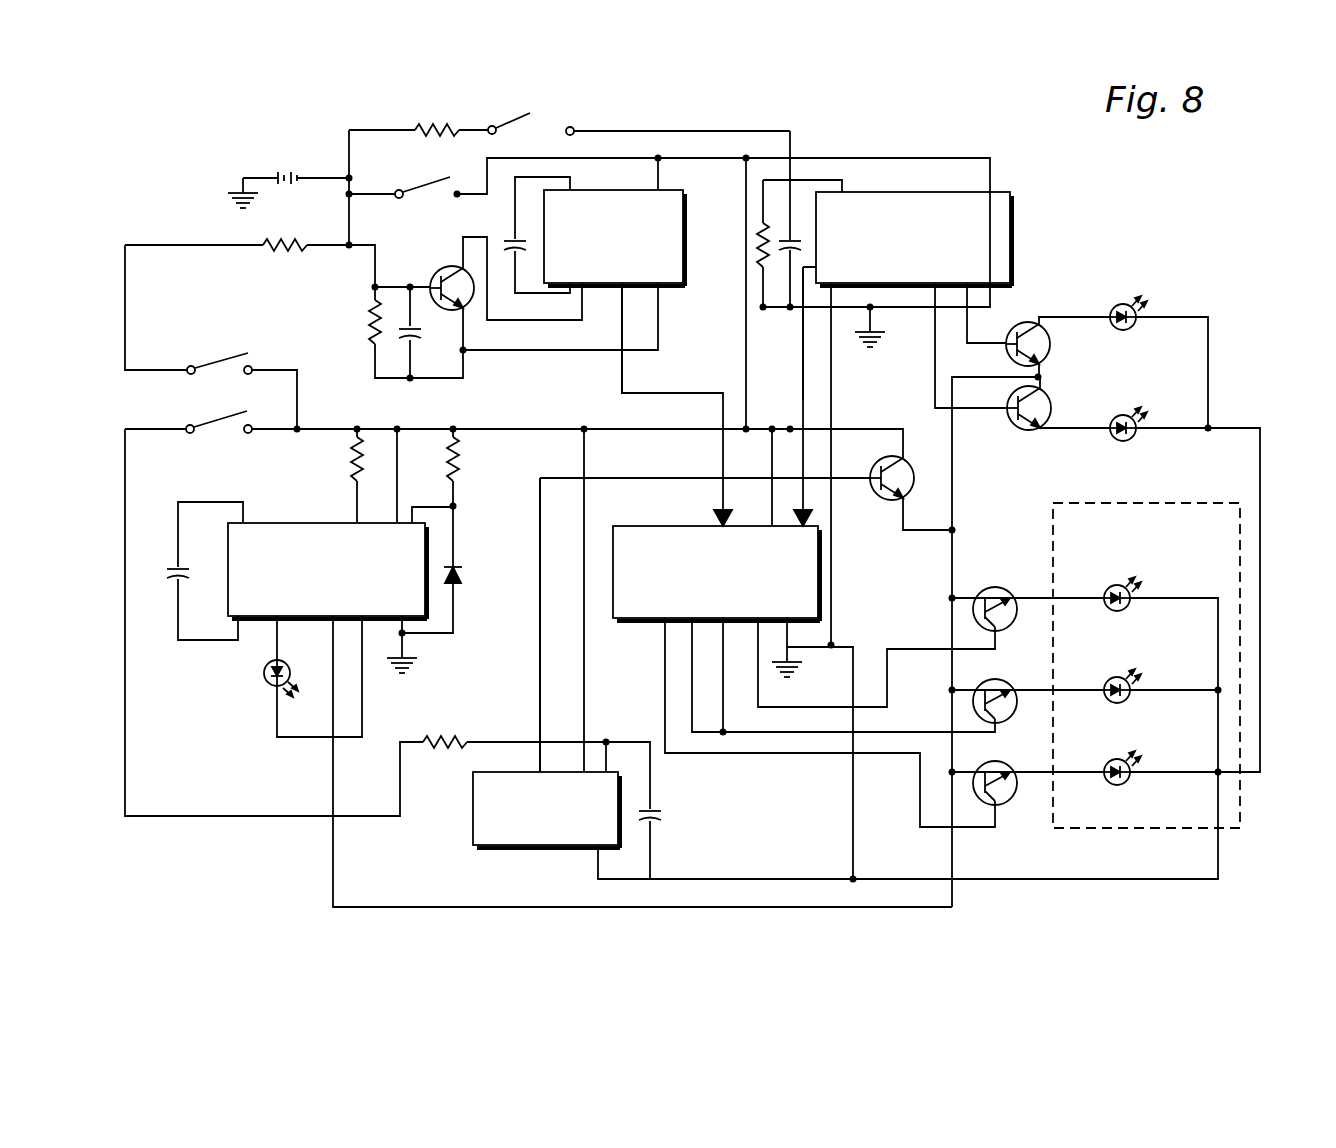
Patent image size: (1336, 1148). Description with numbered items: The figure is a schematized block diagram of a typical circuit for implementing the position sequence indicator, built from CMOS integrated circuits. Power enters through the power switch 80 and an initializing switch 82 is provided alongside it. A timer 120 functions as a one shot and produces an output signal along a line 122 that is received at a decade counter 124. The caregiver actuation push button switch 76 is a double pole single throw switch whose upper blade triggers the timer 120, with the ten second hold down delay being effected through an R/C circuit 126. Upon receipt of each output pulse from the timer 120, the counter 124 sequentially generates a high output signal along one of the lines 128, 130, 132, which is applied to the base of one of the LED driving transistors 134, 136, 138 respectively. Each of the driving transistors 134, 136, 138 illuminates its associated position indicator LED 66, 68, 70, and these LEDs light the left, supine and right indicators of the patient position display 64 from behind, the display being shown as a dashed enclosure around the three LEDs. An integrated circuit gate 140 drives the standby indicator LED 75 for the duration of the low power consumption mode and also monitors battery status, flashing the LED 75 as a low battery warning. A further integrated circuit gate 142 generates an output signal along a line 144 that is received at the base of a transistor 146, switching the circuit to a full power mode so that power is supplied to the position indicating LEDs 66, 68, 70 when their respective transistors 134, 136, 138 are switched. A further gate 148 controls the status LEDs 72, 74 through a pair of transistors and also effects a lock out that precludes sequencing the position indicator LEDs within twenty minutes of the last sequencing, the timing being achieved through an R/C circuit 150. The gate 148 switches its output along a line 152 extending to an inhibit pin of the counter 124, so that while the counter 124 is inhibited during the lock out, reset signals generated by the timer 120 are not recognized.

The patient position display 64 is at (1240, 790).
The position indicator LED 66 is at (1133, 780).
The position indicator LED 68 is at (1133, 698).
The position indicator LED 70 is at (1133, 605).
The status indicator LED 72 is at (1135, 437).
The status indicator LED 74 is at (1135, 323).
The standby indicator LED 75 is at (265, 678).
The caregiver actuation push button switch 76 is at (222, 360).
The power switch 80 is at (423, 180).
The initializing switch 82 is at (523, 117).
The timer 120 is at (683, 252).
The line 122 is at (627, 377).
The decade counter 124 is at (690, 526).
The R/C circuit 126 is at (426, 346).
The line 128 is at (707, 753).
The line 130 is at (800, 733).
The line 132 is at (828, 710).
The LED driving transistor 134 is at (1020, 798).
The LED driving transistor 136 is at (1020, 708).
The LED driving transistor 138 is at (1020, 623).
The integrated circuit gate 140 is at (310, 523).
The integrated circuit gate 142 is at (497, 847).
The line 144 is at (537, 677).
The transistor 146 is at (877, 503).
The gate 148 is at (990, 247).
The R/C circuit 150 is at (790, 207).
The line 152 is at (803, 377).